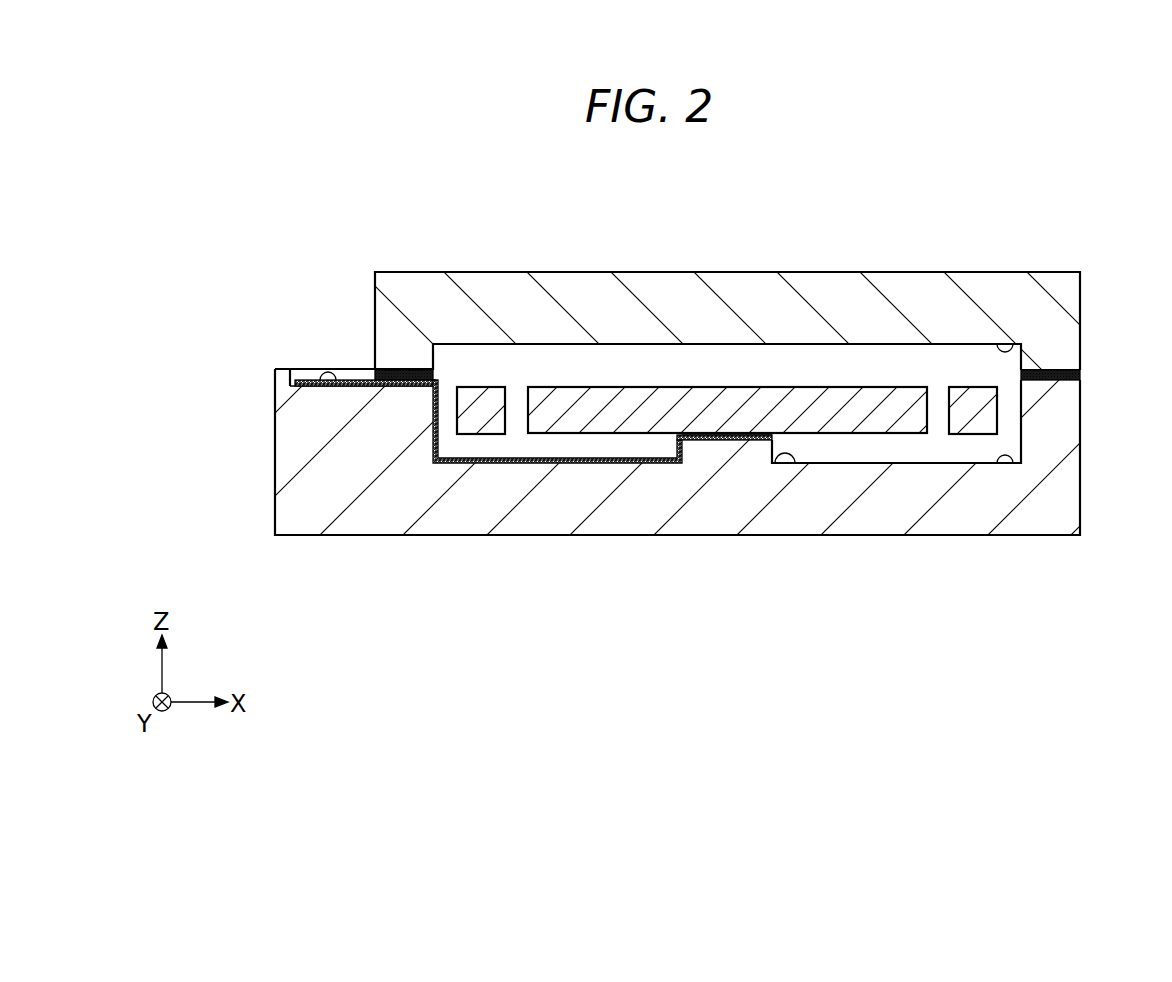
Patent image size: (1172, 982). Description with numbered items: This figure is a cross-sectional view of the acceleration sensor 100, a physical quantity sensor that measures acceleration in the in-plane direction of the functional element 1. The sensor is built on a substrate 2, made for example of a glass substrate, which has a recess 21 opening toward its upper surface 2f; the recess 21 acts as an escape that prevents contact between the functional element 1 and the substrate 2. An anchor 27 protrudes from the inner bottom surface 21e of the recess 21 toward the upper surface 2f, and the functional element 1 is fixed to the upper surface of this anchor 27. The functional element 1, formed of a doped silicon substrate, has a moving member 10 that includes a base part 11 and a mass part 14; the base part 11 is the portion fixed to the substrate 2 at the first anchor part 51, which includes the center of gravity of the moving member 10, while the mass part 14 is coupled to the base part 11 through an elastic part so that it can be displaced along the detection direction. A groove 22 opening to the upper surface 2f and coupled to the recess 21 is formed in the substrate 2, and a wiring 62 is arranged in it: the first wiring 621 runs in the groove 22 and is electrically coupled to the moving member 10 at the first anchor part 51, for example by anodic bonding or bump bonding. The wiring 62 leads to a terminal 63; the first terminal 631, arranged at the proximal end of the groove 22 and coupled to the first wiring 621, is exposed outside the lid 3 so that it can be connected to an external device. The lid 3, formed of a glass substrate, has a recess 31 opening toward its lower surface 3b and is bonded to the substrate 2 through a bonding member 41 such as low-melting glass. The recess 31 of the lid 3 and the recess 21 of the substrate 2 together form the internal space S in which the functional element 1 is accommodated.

The acceleration sensor 100 is at (1170, 180).
The functional element 1 is at (637, 376).
The moving member 10 is at (460, 385).
The base part 11 is at (710, 387).
The mass part 14 is at (495, 387).
The substrate 2 is at (1075, 487).
The upper surface 2f is at (283, 368).
The recess 21 is at (1014, 463).
The inner bottom surface 21e is at (788, 463).
The groove 22 is at (340, 387).
The anchor 27 is at (728, 440).
The lid 3 is at (1082, 300).
The recess 31 is at (1013, 343).
The lower surface 3b is at (1062, 370).
The bonding member 41 is at (408, 369).
The first anchor part 51 is at (757, 434).
The internal space S is at (918, 348).
The wiring 62 is at (503, 423).
The first wiring 621 is at (530, 620).
The terminal 63 is at (354, 308).
The first terminal 631 is at (300, 380).